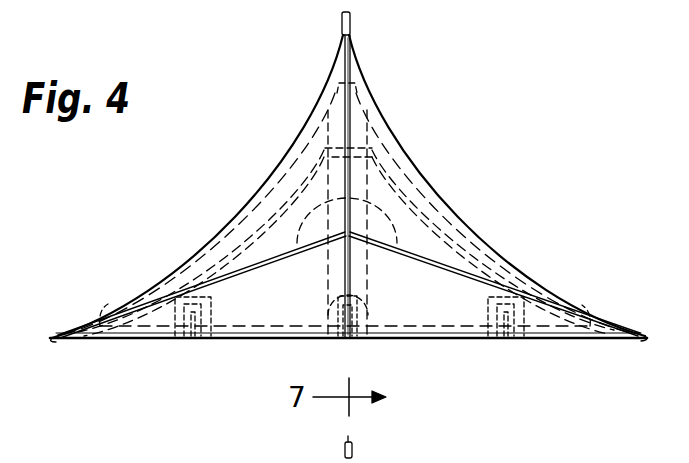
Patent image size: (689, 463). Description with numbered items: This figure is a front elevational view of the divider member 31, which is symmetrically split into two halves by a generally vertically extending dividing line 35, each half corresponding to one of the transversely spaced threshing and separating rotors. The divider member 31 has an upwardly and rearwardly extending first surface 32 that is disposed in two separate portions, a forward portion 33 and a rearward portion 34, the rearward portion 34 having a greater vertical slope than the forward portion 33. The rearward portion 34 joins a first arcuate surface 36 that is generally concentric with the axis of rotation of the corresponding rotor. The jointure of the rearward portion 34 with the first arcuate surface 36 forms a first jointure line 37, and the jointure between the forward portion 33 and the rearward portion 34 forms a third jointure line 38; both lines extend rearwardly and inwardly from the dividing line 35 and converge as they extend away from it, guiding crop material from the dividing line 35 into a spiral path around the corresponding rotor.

The divider member 31 is at (446, 82).
The first surface 32 is at (285, 347).
The forward portion 33 is at (272, 306).
The rearward portion 34 is at (455, 254).
The dividing line 35 is at (351, 108).
The first arcuate surface 36 is at (280, 178).
The first jointure line 37 is at (210, 250).
The third jointure line 38 is at (240, 277).